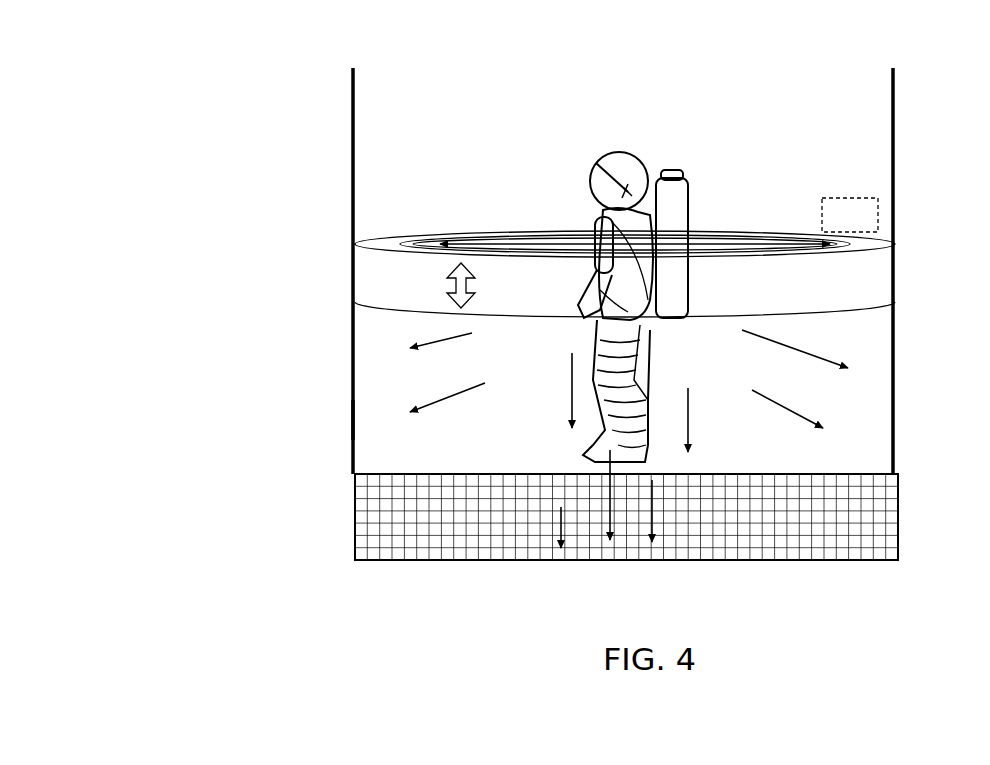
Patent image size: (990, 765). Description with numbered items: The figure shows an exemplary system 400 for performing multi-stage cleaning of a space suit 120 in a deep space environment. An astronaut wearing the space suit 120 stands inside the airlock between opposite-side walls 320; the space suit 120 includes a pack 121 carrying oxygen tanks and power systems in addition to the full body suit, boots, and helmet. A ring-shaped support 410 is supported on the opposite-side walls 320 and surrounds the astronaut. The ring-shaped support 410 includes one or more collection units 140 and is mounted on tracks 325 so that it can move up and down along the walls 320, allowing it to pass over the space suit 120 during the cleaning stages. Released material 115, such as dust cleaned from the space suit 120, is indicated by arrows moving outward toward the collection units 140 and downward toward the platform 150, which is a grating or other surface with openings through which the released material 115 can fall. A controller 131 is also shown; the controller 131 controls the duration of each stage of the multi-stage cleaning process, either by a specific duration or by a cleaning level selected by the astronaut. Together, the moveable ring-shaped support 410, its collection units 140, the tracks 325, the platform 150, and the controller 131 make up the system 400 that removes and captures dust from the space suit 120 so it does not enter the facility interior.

The system 400 is at (232, 67).
The collection unit 140 is at (392, 241).
The released material 115 is at (768, 208).
The controller 131 is at (866, 227).
The ring-shaped support 410 is at (853, 278).
The wall 320 is at (353, 353).
The track 325 is at (353, 433).
The space suit 120 is at (642, 341).
The pack 121 is at (672, 285).
The platform 150 is at (365, 538).